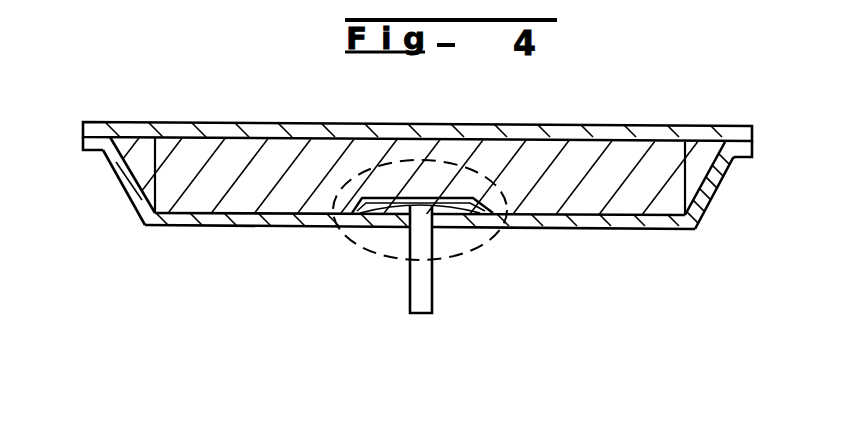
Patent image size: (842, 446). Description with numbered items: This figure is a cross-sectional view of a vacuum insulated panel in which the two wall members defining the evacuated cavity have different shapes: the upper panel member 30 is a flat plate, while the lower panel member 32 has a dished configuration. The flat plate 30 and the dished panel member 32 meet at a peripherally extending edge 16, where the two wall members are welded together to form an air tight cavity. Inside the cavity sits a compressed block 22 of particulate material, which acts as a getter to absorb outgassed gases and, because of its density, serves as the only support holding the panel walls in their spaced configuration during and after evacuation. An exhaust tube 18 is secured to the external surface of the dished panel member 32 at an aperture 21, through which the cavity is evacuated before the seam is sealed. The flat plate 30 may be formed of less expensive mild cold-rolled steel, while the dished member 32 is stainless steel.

The flat plate panel member 30 is at (220, 84).
The compressed block of particulate material 22 is at (652, 145).
The peripherally extending edge 16 is at (84, 143).
The dished panel member 32 is at (128, 187).
The aperture 21 is at (422, 215).
The exhaust tube 18 is at (435, 230).